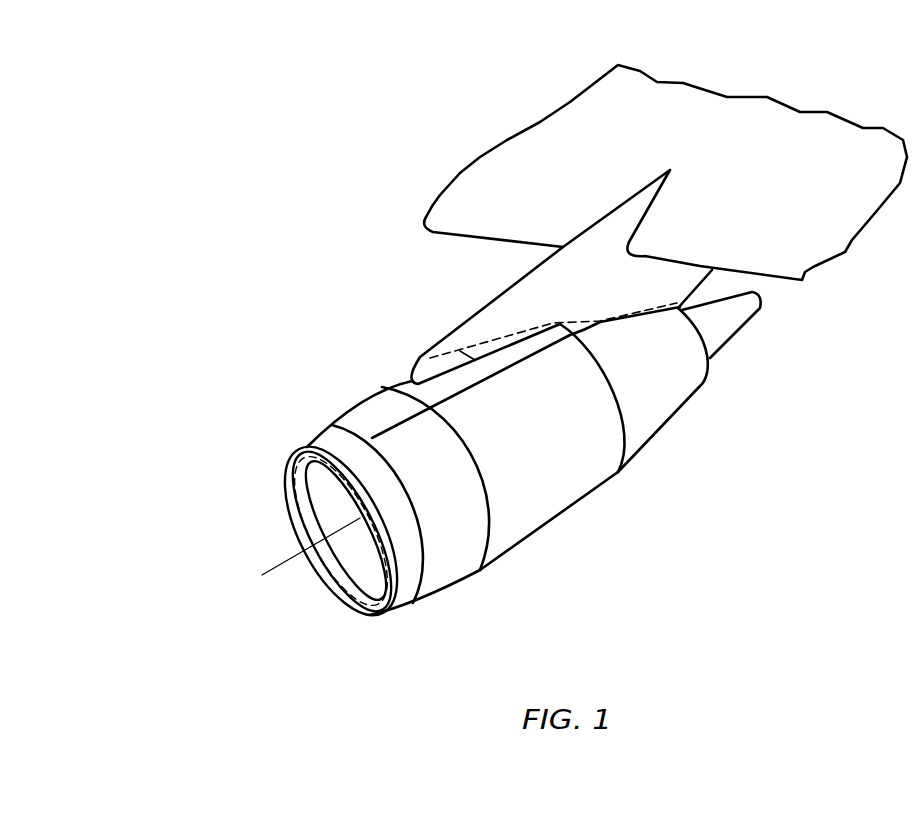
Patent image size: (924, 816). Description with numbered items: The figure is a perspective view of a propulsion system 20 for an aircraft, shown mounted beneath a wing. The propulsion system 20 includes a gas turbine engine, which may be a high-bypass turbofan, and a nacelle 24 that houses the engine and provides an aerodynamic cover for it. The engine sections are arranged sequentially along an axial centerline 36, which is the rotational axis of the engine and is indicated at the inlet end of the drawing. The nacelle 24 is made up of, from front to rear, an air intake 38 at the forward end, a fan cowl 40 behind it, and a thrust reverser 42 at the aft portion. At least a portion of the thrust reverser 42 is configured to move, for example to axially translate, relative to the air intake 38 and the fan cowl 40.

The propulsion system 20 is at (258, 196).
The nacelle 24 is at (690, 432).
The axial centerline 36 is at (278, 568).
The air intake 38 is at (298, 444).
The fan cowl 40 is at (414, 437).
The thrust reverser 42 is at (513, 527).